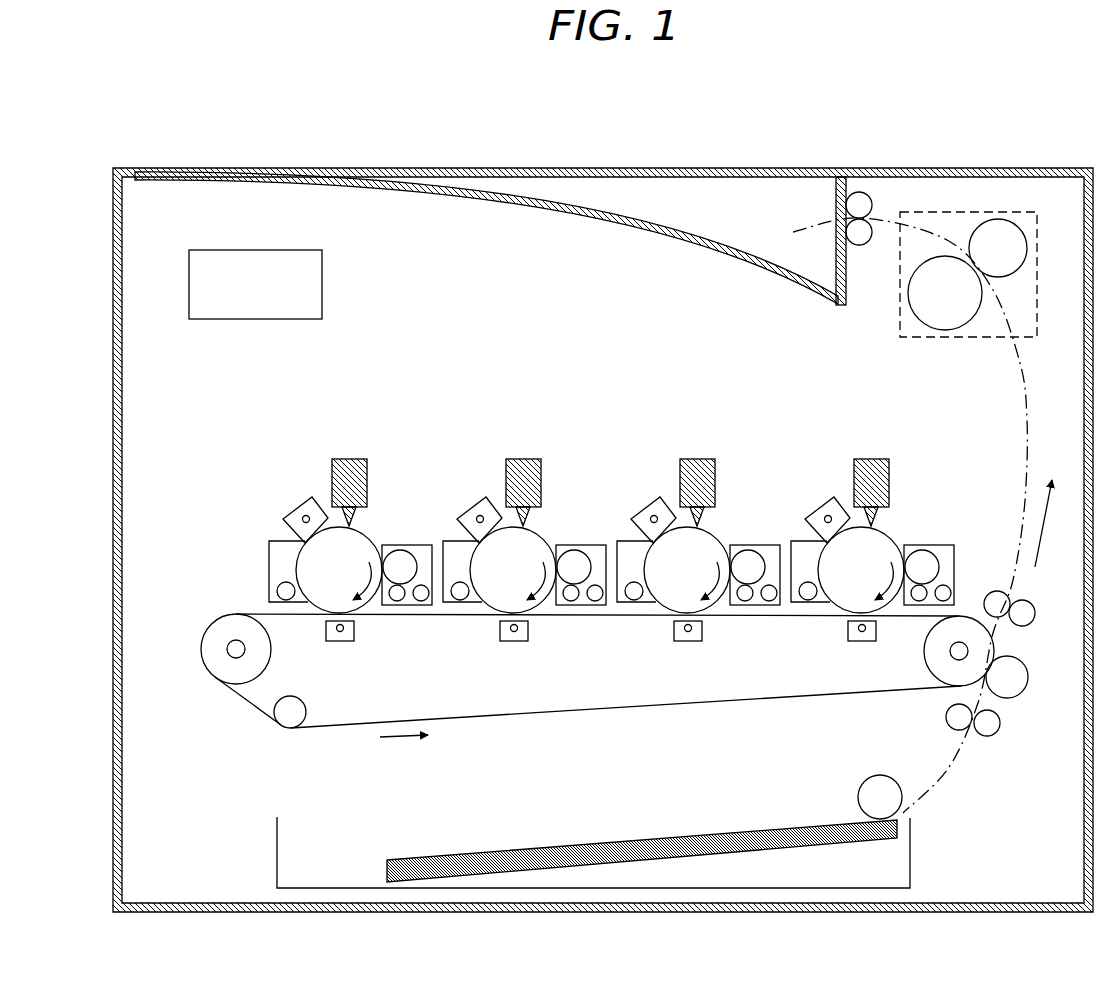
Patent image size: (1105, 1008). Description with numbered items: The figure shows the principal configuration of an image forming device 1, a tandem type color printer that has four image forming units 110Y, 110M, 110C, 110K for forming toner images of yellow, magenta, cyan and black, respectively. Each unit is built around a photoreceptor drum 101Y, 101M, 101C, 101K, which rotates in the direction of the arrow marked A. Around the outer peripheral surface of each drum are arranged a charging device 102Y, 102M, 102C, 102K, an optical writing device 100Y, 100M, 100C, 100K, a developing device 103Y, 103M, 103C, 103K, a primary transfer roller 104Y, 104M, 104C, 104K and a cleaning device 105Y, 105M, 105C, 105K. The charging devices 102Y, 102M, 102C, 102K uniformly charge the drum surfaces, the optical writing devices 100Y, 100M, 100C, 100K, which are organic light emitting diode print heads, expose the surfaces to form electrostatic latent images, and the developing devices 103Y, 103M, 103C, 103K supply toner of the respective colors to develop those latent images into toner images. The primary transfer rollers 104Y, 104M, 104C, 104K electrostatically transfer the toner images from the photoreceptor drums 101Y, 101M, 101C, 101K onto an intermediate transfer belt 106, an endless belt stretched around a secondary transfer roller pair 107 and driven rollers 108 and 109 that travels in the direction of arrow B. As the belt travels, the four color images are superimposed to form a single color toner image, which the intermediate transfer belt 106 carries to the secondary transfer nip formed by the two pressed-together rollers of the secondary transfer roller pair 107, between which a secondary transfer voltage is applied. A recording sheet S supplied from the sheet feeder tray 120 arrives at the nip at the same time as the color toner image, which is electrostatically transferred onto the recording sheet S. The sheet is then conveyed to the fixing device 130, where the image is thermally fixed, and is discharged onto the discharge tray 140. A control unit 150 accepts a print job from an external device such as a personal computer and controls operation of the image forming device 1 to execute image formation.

The image forming device 1 is at (719, 93).
The optical writing device 100K is at (352, 458).
The optical writing device 100C is at (526, 458).
The optical writing device 100M is at (700, 458).
The optical writing device 100Y is at (874, 458).
The photoreceptor drum 101K is at (374, 533).
The photoreceptor drum 101C is at (548, 533).
The photoreceptor drum 101M is at (722, 533).
The photoreceptor drum 101Y is at (896, 533).
The charging device 102K is at (299, 507).
The charging device 102C is at (473, 507).
The charging device 102M is at (647, 507).
The charging device 102Y is at (821, 507).
The developing device 103K is at (423, 543).
The developing device 103C is at (597, 543).
The developing device 103M is at (771, 543).
The developing device 103Y is at (943, 543).
The primary transfer roller 104K is at (339, 642).
The primary transfer roller 104C is at (513, 642).
The primary transfer roller 104M is at (687, 642).
The primary transfer roller 104Y is at (861, 642).
The cleaning device 105K is at (286, 600).
The cleaning device 105C is at (460, 600).
The cleaning device 105M is at (634, 600).
The cleaning device 105Y is at (808, 600).
The intermediate transfer belt 106 is at (575, 716).
The secondary transfer roller pair 107 is at (963, 627).
The driven roller 108 is at (222, 628).
The driven roller 109 is at (287, 718).
The image forming unit 110K is at (363, 632).
The image forming unit 110C is at (543, 622).
The image forming unit 110M is at (717, 622).
The image forming unit 110Y is at (886, 628).
The sheet feeder tray 120 is at (277, 852).
The fixing device 130 is at (897, 311).
The discharge tray 140 is at (571, 198).
The control unit 150 is at (326, 283).
The recording sheet S is at (712, 828).
The arrow B is at (404, 752).